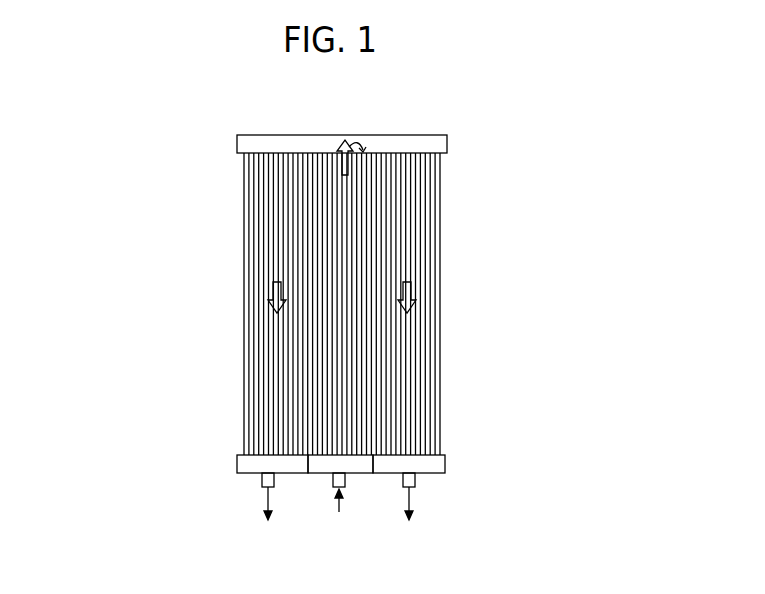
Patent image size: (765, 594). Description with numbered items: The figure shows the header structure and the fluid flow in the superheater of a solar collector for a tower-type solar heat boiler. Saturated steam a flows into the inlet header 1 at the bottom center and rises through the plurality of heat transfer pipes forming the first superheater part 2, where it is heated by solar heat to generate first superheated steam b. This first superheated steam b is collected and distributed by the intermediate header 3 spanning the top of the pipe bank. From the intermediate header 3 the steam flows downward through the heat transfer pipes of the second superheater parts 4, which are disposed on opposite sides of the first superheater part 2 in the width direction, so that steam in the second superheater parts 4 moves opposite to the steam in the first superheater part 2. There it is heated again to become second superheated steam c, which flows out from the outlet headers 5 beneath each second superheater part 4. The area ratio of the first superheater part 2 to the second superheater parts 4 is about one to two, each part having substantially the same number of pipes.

The inlet header 1 is at (460, 436).
The first superheater part 2 is at (494, 304).
The intermediate header 3 is at (464, 145).
The second superheater part 4 is at (373, 304).
The outlet header 5 is at (343, 471).
The saturated steam a is at (334, 521).
The first superheated steam b is at (373, 153).
The second superheated steam c is at (347, 401).